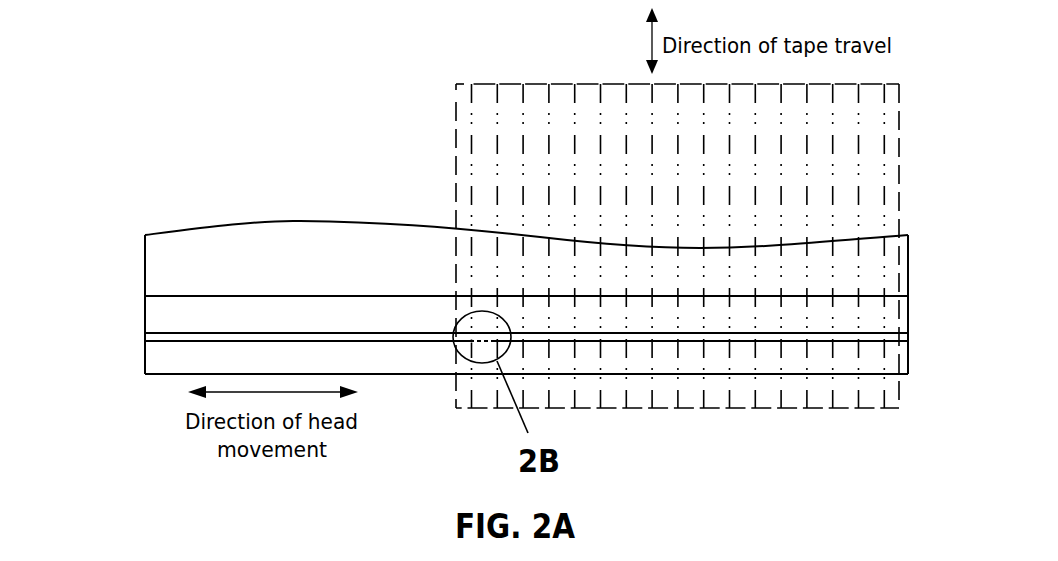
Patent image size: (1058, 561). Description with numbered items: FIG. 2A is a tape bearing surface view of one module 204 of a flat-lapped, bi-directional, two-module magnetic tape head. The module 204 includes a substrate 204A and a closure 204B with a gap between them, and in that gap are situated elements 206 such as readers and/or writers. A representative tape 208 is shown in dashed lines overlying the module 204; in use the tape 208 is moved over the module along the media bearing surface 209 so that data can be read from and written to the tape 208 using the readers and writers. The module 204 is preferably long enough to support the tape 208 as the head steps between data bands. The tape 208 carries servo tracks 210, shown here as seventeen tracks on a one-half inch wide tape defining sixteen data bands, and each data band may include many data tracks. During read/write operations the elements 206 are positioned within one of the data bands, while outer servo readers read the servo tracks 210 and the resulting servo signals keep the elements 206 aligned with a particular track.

The module 204 is at (475, 256).
The substrate 204A is at (290, 222).
The closure 204B is at (143, 360).
The elements 206 is at (446, 335).
The tape 208 is at (456, 84).
The tape bearing surface 209 is at (352, 318).
The servo tracks 210 is at (575, 177).